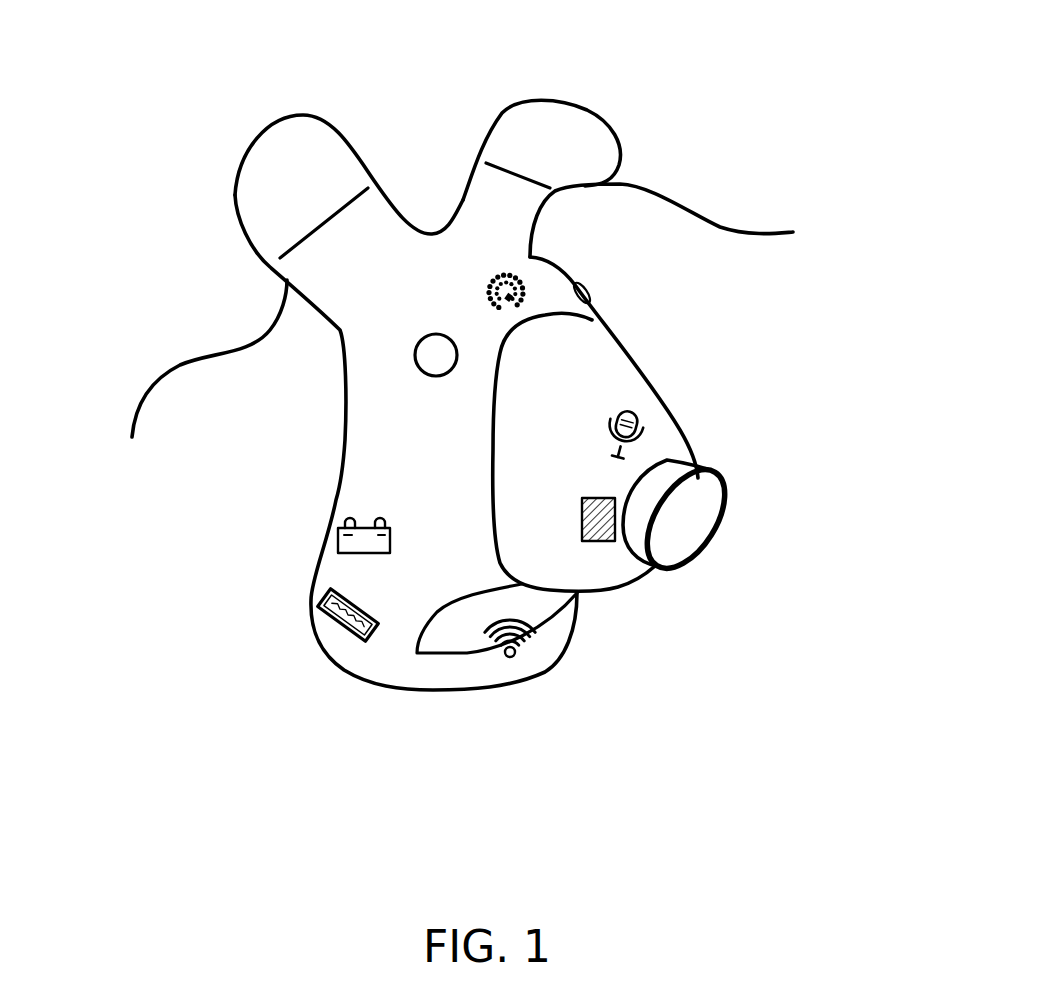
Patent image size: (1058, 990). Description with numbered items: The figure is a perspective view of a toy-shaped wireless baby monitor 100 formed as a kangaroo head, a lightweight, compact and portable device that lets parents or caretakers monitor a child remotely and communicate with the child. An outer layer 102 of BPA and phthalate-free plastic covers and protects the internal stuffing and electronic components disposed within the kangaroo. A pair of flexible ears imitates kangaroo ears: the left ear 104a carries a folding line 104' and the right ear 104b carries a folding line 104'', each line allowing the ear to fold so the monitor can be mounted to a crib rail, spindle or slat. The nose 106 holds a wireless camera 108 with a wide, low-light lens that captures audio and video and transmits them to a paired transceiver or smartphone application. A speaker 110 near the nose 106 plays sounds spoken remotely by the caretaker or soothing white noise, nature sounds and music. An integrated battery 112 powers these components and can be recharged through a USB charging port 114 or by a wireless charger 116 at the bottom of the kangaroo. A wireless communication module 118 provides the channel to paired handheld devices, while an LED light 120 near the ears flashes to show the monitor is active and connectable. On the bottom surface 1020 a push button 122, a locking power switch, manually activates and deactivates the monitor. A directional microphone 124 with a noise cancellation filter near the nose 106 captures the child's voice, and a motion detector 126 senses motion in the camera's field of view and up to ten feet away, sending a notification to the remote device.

The toy-shaped wireless baby monitor 100 is at (178, 138).
The outer layer 102 is at (567, 355).
The folding line 104' is at (515, 106).
The folding line 104'' is at (270, 186).
The left ear 104a is at (689, 331).
The right ear 104b is at (199, 372).
The nose 106 is at (678, 460).
The wireless camera 108 is at (687, 532).
The speaker 110 is at (600, 542).
The battery 112 is at (338, 532).
The USB charging port 114 is at (318, 610).
The wireless charger 116 is at (386, 688).
The wireless communication module 118 is at (512, 657).
The LED light 120 is at (523, 283).
The push button 122 is at (435, 690).
The directional microphone 124 is at (646, 432).
The motion detector 126 is at (553, 448).
The bottom surface 1020 is at (495, 690).